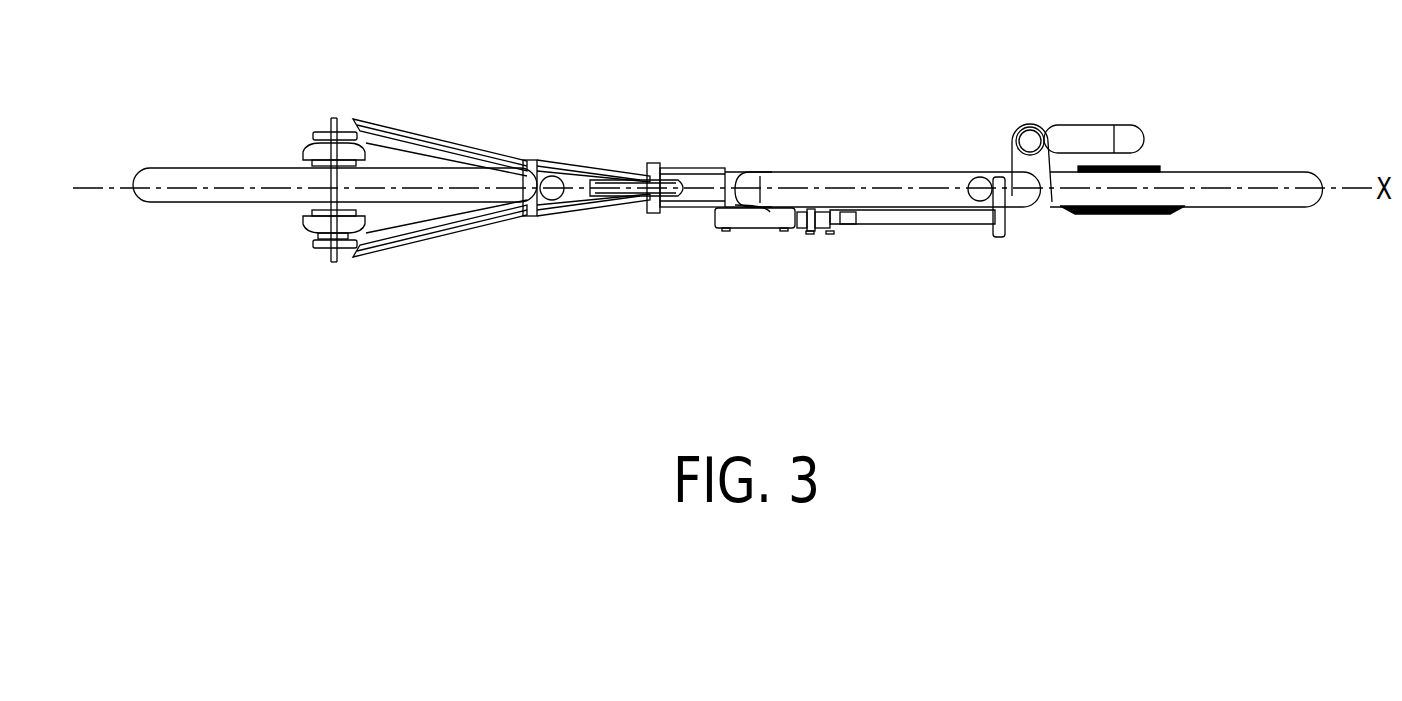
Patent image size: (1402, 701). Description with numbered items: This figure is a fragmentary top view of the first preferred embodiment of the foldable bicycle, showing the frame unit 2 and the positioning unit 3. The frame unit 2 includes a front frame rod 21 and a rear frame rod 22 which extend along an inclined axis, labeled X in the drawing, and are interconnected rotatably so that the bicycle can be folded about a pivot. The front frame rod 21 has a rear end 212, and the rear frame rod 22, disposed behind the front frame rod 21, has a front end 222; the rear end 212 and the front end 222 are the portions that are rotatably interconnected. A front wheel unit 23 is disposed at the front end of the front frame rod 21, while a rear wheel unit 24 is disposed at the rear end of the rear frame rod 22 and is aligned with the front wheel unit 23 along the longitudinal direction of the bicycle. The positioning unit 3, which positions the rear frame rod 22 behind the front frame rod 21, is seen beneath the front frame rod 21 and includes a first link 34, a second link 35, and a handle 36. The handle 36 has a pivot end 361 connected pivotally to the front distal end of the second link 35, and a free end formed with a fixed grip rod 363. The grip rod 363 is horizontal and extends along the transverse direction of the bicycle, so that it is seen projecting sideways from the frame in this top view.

The frame unit 2 is at (812, 166).
The front frame rod 21 is at (915, 170).
The rear frame rod 22 is at (643, 210).
The front wheel unit 23 is at (1230, 172).
The rear wheel unit 24 is at (205, 203).
The rear end 212 is at (767, 205).
The front end 222 is at (718, 168).
The positioning unit 3 is at (851, 232).
The first link 34 is at (787, 232).
The second link 35 is at (748, 228).
The handle 36 is at (950, 225).
The pivot end 361 is at (856, 207).
The grip rod 363 is at (1005, 215).